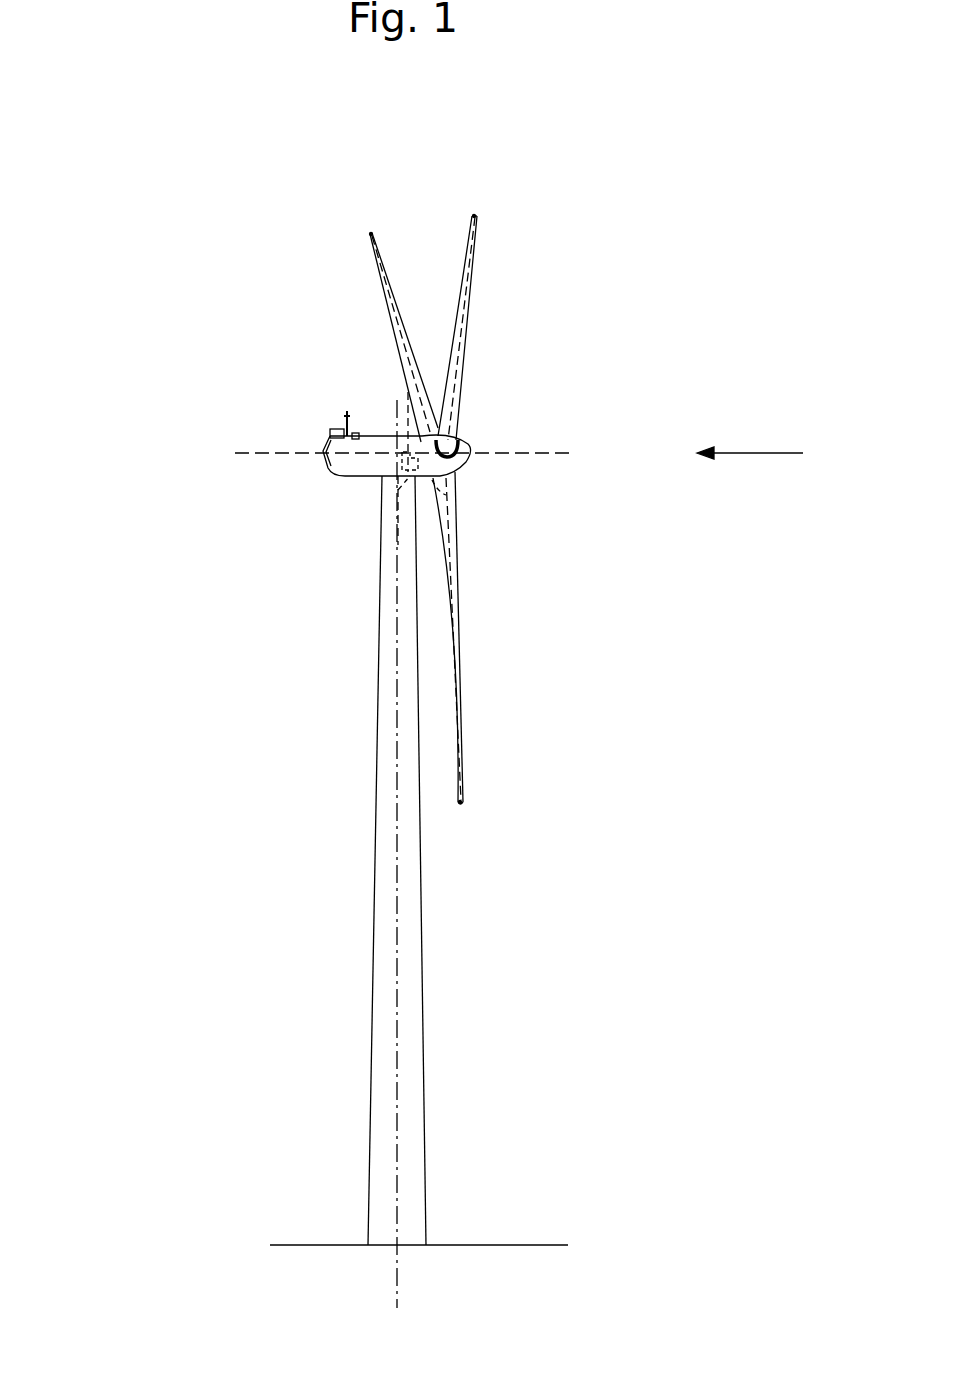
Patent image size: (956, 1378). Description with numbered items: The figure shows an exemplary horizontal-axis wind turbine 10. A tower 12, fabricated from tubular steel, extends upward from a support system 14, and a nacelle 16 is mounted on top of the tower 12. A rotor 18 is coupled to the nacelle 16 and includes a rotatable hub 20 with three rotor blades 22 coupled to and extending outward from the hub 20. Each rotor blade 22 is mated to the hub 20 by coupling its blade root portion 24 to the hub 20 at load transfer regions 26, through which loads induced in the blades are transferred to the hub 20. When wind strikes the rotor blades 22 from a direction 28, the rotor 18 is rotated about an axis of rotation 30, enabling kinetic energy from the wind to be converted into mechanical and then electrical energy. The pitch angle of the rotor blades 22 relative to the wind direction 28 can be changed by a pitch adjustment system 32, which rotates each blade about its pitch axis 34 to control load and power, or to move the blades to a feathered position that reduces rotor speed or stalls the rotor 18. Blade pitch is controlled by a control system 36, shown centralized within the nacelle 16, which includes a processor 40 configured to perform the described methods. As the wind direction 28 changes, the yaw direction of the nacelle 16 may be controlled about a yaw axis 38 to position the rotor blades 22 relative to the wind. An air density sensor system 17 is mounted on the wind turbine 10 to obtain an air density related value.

The wind turbine 10 is at (157, 245).
The tower 12 is at (372, 1013).
The support system 14 is at (328, 1245).
The nacelle 16 is at (350, 477).
The air density sensor system 17 is at (328, 433).
The rotor 18 is at (475, 358).
The rotatable hub 20 is at (470, 448).
The rotor blade 22 is at (392, 301).
The blade root portion 24 is at (452, 562).
The load transfer region 26 is at (450, 477).
The direction 28 is at (771, 453).
The axis of rotation 30 is at (532, 453).
The pitch adjustment system 32 is at (432, 497).
The pitch axis 34 is at (369, 236).
The control system 36 is at (398, 490).
The yaw axis 38 is at (397, 903).
The processor 40 is at (405, 405).